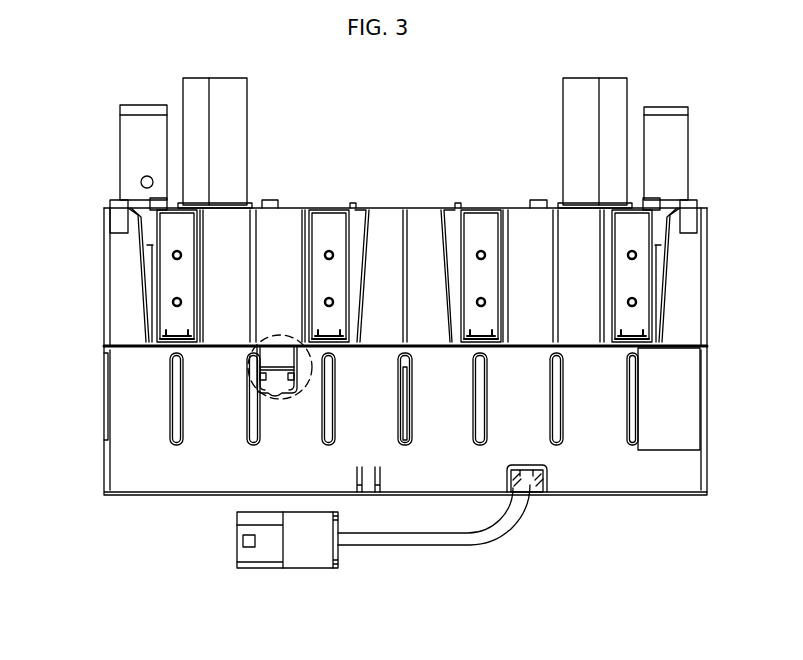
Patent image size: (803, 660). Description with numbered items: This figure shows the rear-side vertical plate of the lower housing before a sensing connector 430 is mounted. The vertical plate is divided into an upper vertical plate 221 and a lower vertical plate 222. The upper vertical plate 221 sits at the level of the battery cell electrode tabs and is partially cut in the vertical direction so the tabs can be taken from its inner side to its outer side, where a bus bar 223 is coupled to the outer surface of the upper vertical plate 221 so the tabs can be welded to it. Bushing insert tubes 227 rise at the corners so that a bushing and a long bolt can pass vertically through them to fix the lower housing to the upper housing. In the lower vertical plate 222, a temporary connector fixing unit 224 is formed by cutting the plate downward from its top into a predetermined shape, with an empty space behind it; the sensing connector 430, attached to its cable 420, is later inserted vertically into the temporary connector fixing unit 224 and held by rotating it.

The upper vertical plate 221 is at (110, 290).
The lower vertical plate 222 is at (127, 422).
The bus bar 223 is at (329, 216).
The temporary connector fixing unit 224 is at (272, 390).
The bushing insert tube 227 is at (248, 102).
The cable 420 is at (440, 546).
The sensing connector 430 is at (308, 569).